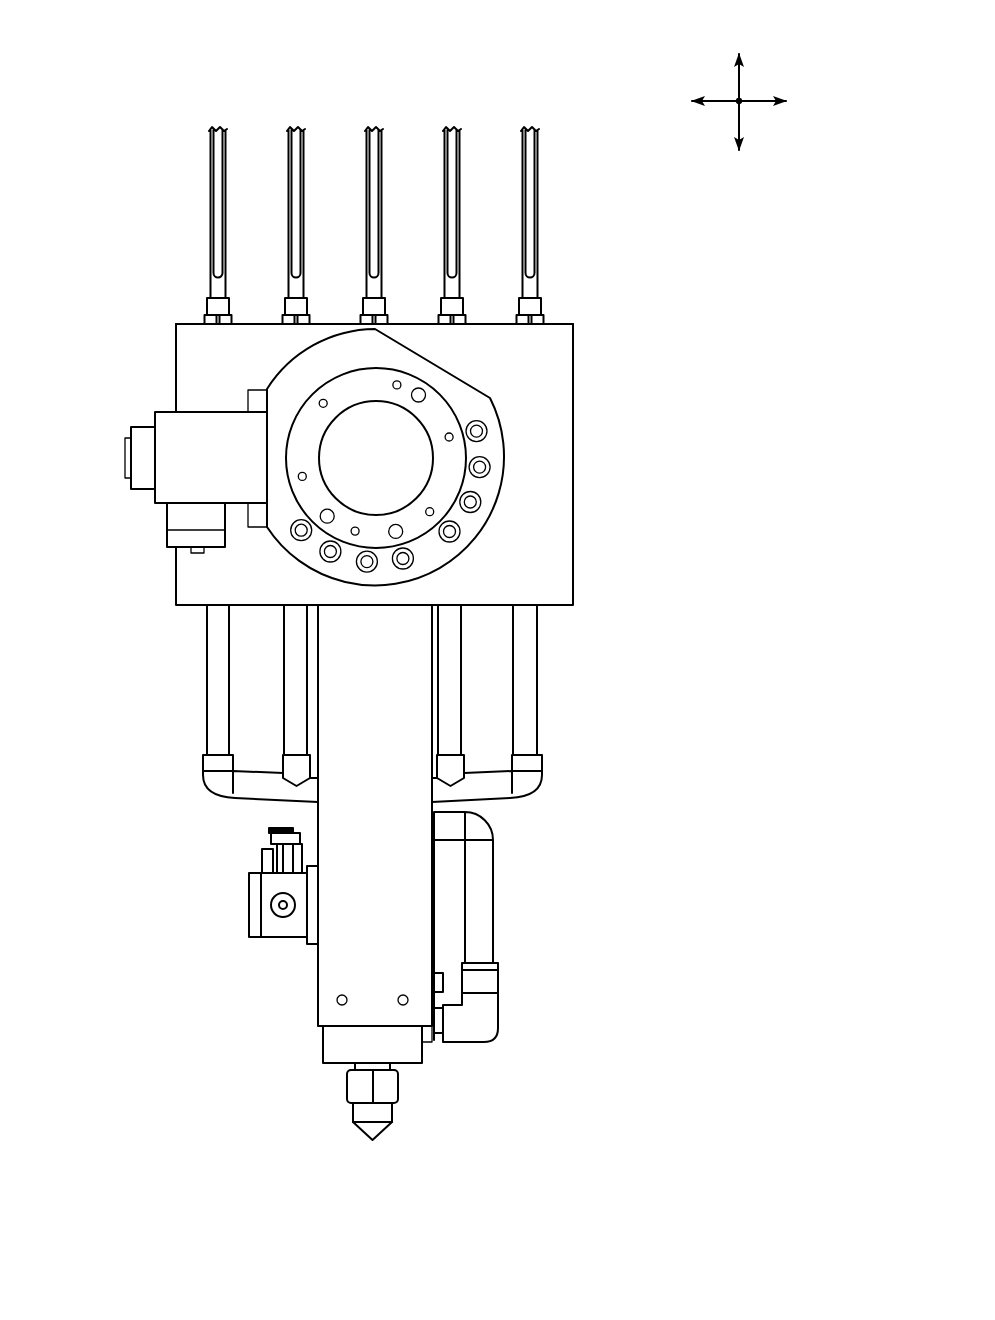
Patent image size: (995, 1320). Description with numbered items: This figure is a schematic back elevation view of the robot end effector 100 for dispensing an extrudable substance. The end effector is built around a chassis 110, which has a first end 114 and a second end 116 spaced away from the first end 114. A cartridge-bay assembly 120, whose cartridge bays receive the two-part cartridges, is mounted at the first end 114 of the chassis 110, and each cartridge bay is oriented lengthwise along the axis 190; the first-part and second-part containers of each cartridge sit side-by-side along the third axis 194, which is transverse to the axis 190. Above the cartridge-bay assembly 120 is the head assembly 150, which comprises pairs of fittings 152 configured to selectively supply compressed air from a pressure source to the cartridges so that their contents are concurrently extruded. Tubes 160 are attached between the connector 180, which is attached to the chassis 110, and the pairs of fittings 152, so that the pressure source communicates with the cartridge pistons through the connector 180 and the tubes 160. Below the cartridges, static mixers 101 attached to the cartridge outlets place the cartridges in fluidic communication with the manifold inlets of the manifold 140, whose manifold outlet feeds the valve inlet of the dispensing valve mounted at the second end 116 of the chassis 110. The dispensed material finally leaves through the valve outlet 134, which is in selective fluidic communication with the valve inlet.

The robot end effector 100 is at (137, 90).
The static mixers 101 is at (537, 713).
The chassis 110 is at (318, 991).
The first end 114 is at (581, 326).
The second end 116 is at (323, 1066).
The cartridge-bay assembly 120 is at (573, 408).
The valve outlet 134 is at (364, 1145).
The manifold 140 is at (495, 902).
The head assembly 150 is at (575, 310).
The pairs of fittings 152 is at (208, 308).
The tubes 160 is at (457, 140).
The connector 180 is at (477, 538).
The axis 190 is at (738, 69).
The third axis 194 is at (762, 100).